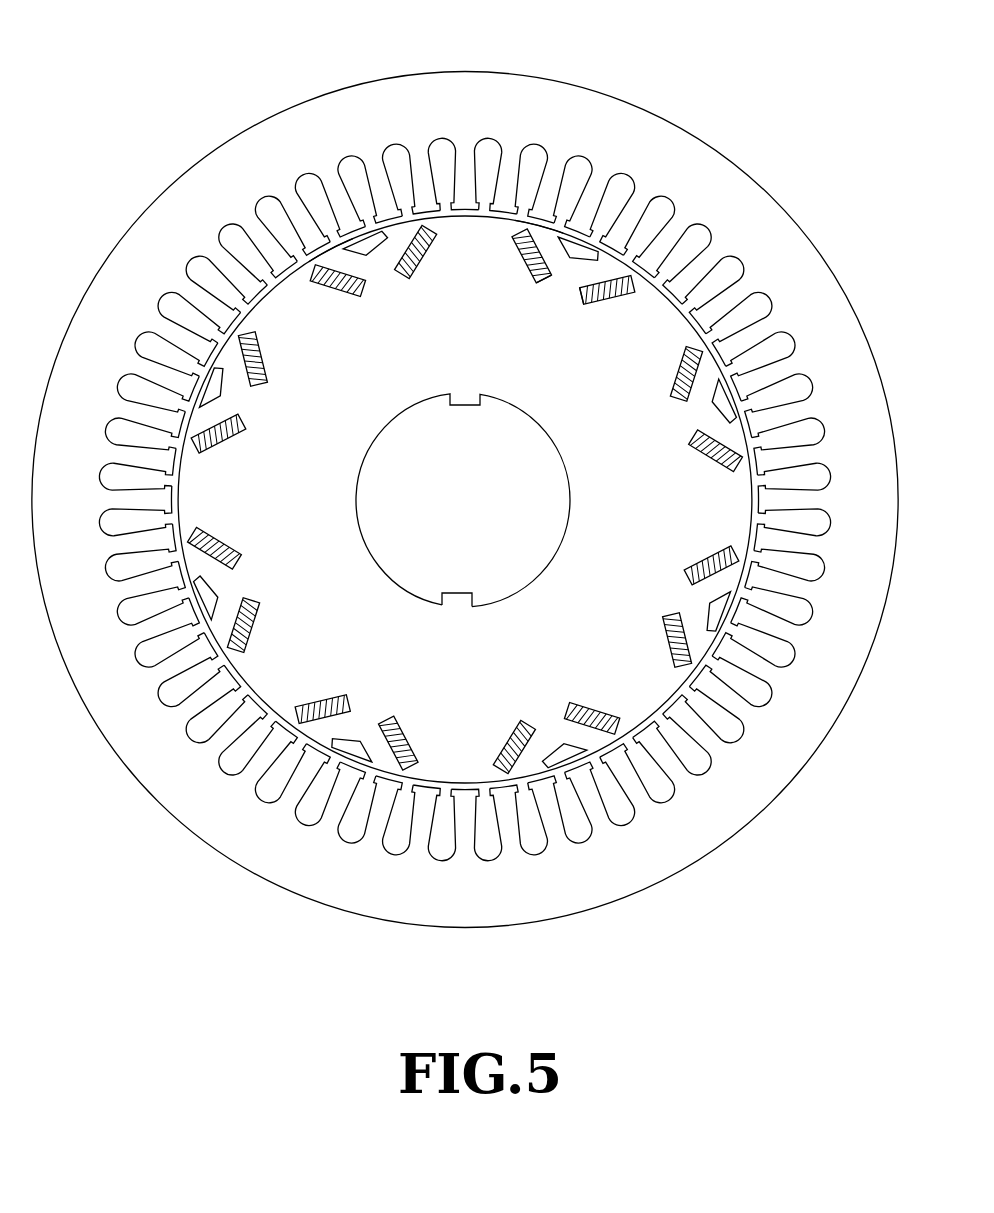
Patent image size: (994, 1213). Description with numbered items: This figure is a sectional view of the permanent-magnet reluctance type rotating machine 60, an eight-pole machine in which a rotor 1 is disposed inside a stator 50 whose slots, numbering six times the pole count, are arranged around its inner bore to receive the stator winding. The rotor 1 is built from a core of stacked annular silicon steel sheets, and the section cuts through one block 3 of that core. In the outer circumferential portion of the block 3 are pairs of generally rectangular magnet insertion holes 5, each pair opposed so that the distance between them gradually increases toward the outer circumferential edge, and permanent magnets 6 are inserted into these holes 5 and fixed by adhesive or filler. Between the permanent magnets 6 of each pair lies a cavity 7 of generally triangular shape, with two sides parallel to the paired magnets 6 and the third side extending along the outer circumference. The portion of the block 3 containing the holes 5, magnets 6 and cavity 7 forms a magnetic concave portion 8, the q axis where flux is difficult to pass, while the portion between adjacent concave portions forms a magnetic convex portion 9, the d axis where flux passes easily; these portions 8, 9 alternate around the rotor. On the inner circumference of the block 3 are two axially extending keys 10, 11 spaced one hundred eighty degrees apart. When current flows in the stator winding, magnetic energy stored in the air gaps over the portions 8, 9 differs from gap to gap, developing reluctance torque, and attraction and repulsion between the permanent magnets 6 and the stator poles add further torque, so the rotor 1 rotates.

The rotor 1 is at (686, 309).
The block 3 is at (645, 696).
The magnet insertion hole 5 is at (521, 244).
The permanent magnet 6 is at (524, 270).
The cavity 7 is at (576, 244).
The magnetic concave portion 8 is at (332, 252).
The magnetic convex portion 9 is at (452, 228).
The key 10 is at (475, 405).
The key 11 is at (470, 593).
The stator 50 is at (397, 100).
The permanent-magnet reluctance type rotating machine 60 is at (738, 117).